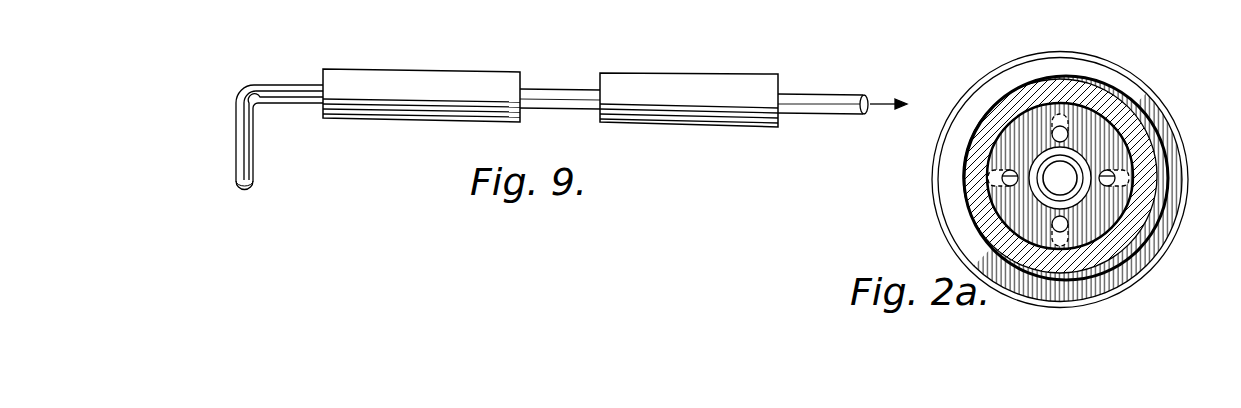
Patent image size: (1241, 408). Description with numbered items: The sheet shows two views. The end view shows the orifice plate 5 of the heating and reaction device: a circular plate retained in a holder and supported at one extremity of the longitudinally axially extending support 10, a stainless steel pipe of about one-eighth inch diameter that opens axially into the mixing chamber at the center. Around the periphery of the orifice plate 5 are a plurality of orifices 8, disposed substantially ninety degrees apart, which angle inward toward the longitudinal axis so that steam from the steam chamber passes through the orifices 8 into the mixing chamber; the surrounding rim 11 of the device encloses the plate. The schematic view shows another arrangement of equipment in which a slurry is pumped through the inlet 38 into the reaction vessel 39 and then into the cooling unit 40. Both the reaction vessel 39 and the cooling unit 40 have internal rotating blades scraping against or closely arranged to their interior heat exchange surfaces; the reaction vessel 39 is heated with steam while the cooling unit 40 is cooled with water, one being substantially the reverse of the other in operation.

In FIG. 9, the inlet 38 is at (238, 166).
In FIG. 9, the reaction vessel 39 is at (445, 72).
In FIG. 9, the cooling unit 40 is at (727, 60).
In FIG. 2A, the orifices 8 is at (989, 140).
In FIG. 2A, the wheel rim 11 is at (1105, 62).
In FIG. 2A, the orifice plate 5 is at (1092, 130).
In FIG. 2A, the support 10 is at (1078, 165).